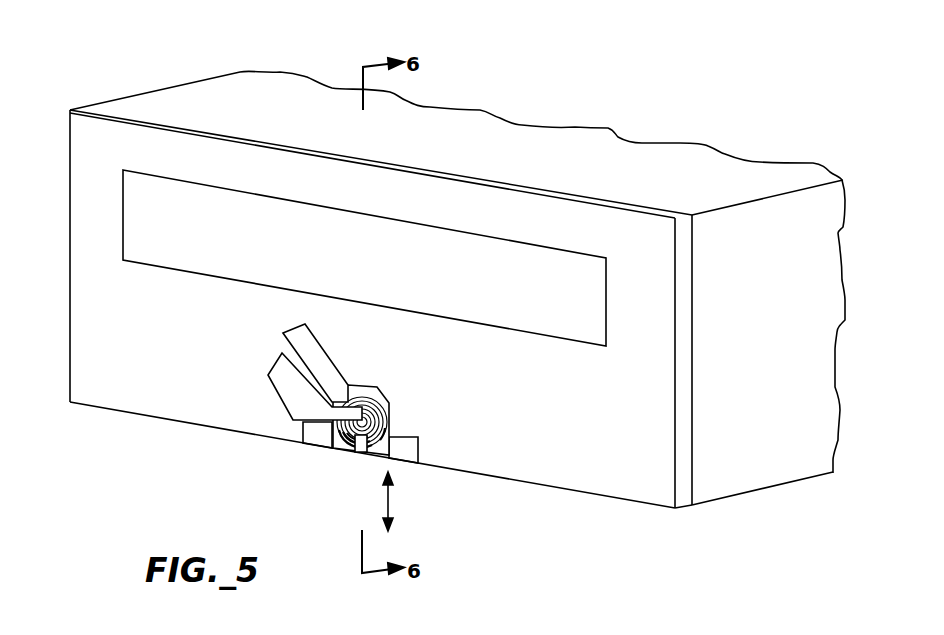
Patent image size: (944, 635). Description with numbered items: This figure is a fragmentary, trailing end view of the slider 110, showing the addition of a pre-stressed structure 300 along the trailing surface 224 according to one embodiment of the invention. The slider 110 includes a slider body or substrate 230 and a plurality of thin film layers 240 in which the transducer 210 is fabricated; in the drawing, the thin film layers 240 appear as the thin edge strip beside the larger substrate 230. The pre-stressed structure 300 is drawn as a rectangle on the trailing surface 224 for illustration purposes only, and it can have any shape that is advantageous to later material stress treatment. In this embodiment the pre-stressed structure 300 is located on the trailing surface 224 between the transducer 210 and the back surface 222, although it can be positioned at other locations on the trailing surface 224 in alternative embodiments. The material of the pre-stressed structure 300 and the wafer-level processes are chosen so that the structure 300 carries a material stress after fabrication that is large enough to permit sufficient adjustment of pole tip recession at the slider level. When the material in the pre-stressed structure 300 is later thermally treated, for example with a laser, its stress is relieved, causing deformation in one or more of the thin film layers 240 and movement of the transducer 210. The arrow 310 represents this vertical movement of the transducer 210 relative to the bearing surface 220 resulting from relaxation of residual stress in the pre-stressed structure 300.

The slider 110 is at (236, 50).
The back surface 222 is at (177, 93).
The trailing surface 224 is at (133, 318).
The bearing surface 220 is at (172, 422).
The slider body or substrate 230 is at (833, 480).
The thin film layers 240 is at (673, 506).
The pre-stressed structure 300 is at (358, 265).
The transducer 210 is at (367, 453).
The arrow 310 is at (397, 497).